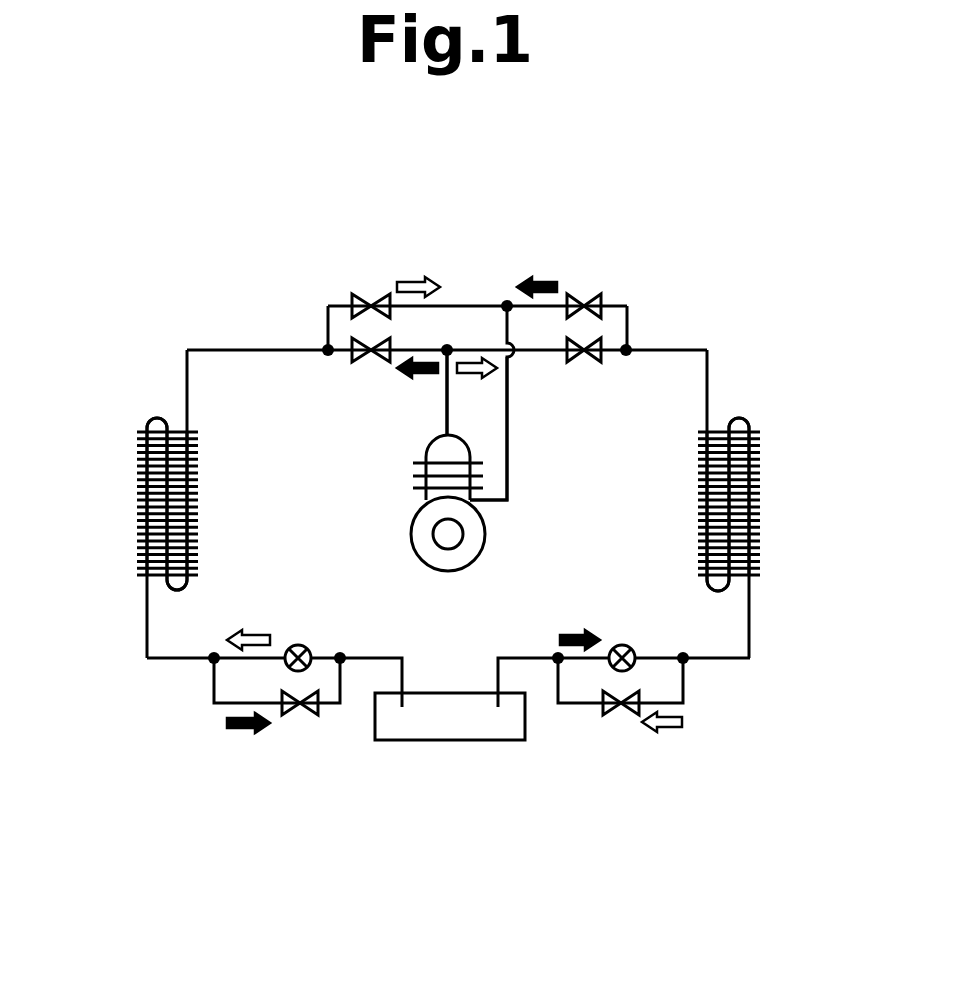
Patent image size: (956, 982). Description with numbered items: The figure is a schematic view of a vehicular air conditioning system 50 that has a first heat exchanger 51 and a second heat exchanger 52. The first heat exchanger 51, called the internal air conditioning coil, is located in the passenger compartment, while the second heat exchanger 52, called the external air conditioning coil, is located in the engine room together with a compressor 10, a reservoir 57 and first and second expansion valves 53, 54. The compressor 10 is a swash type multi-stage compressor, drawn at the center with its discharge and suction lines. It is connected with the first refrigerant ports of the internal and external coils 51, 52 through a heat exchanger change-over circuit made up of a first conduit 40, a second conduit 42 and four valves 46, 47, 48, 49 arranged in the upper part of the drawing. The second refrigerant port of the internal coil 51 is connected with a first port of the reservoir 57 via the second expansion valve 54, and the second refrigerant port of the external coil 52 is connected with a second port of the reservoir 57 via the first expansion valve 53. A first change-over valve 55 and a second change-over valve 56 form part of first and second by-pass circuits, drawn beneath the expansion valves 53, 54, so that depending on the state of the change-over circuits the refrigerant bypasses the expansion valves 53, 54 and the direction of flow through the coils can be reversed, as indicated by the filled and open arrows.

The compressor 10 is at (405, 506).
The first conduit 40 is at (447, 400).
The second conduit 42 is at (507, 465).
The valve 46 is at (368, 294).
The valve 47 is at (584, 294).
The valve 48 is at (360, 362).
The valve 49 is at (583, 364).
The air conditioning system 50 is at (707, 313).
The first heat exchanger 51 is at (787, 494).
The second heat exchanger 52 is at (110, 481).
The first expansion valve 53 is at (301, 632).
The second expansion valve 54 is at (634, 633).
The first change-over valve 55 is at (300, 716).
The second change-over valve 56 is at (621, 716).
The reservoir 57 is at (512, 742).